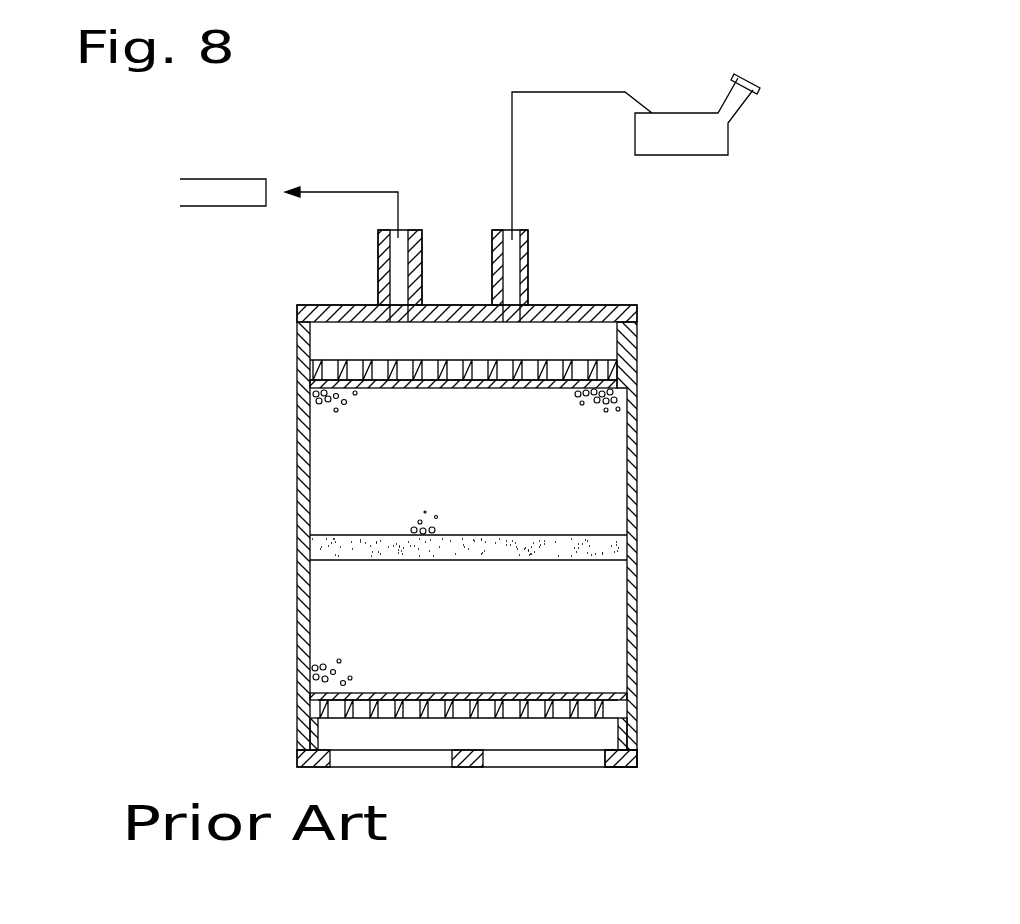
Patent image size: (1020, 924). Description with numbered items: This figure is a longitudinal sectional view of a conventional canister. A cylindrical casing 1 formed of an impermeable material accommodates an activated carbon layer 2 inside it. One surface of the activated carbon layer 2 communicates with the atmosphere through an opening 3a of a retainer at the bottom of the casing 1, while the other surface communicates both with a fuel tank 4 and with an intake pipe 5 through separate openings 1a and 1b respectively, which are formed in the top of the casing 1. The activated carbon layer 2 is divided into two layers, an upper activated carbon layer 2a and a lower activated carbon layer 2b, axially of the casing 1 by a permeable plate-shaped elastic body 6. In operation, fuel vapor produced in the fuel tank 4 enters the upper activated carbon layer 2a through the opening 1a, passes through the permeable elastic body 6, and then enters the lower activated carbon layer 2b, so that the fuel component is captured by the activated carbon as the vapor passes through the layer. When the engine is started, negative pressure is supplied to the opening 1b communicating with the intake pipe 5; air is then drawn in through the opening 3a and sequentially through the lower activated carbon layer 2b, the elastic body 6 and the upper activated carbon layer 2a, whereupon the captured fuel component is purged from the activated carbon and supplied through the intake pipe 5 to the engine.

The cylindrical casing 1 is at (637, 452).
The opening 1a is at (528, 247).
The opening 1b is at (424, 240).
The activated carbon layer 2 is at (727, 492).
The upper activated carbon layer 2a is at (588, 502).
The lower activated carbon layer 2b is at (593, 607).
The opening of retainer 3a is at (612, 765).
The fuel tank 4 is at (668, 157).
The intake pipe 5 is at (232, 179).
The permeable plate-shaped elastic body 6 is at (341, 533).